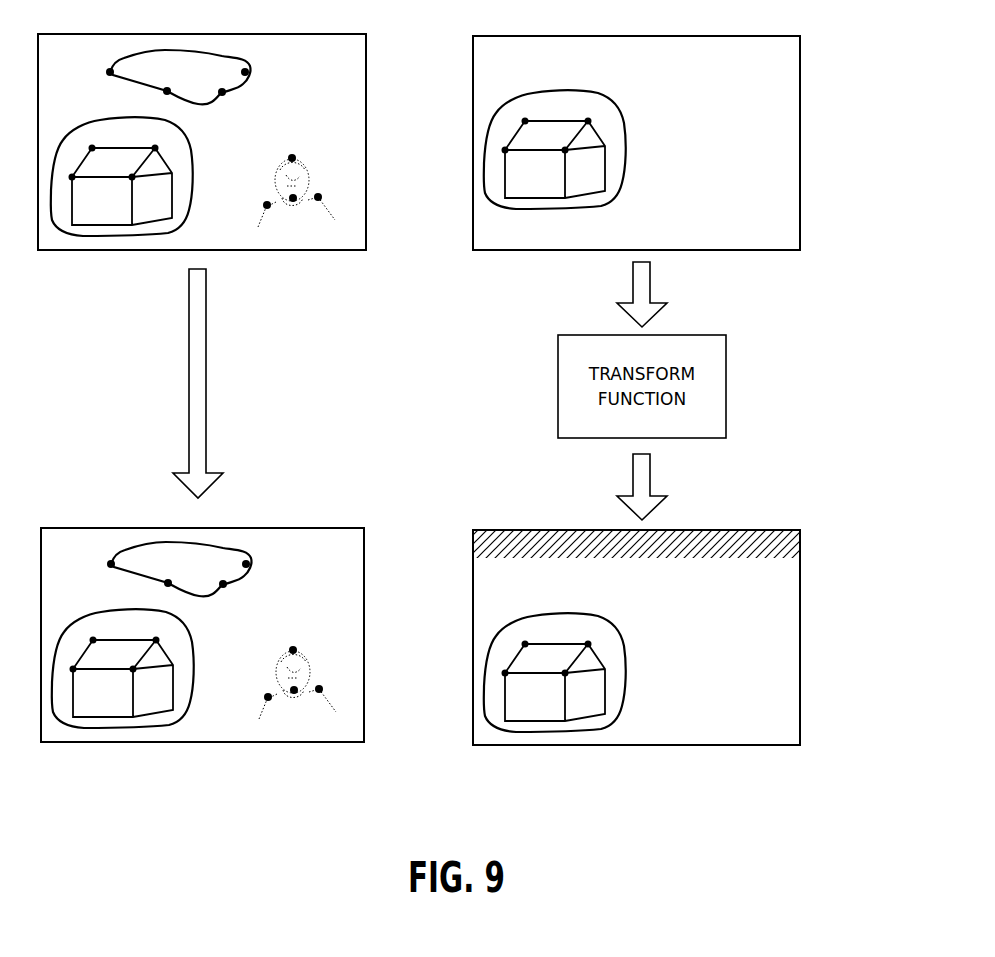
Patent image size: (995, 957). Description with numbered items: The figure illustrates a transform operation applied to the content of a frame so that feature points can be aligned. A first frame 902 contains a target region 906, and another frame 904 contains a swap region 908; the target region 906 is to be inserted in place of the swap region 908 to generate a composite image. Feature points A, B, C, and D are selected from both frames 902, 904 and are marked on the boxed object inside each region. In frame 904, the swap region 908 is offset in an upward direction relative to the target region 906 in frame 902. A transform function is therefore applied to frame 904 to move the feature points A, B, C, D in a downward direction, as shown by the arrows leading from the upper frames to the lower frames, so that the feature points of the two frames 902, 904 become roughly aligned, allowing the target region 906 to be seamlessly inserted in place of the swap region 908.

The first frame 902 is at (367, 83).
The frame 904 is at (802, 93).
The target region 906 is at (190, 152).
The swap region 908 is at (623, 125).